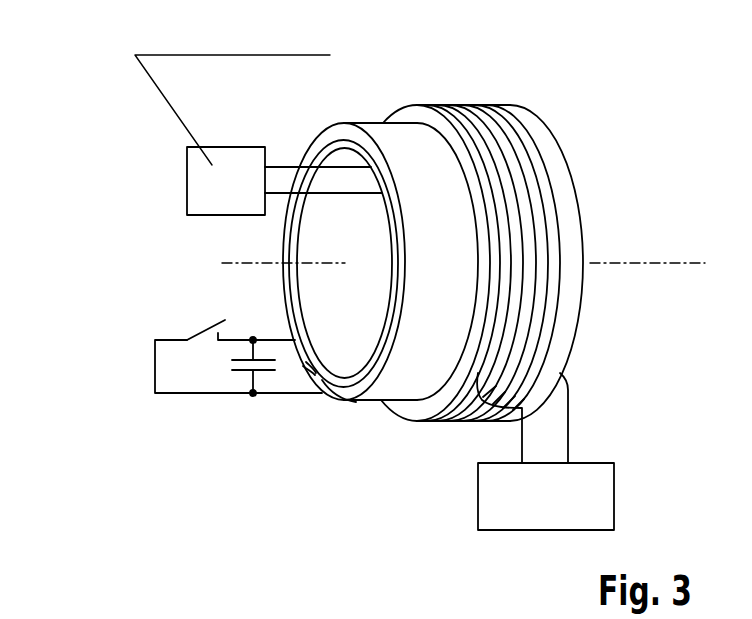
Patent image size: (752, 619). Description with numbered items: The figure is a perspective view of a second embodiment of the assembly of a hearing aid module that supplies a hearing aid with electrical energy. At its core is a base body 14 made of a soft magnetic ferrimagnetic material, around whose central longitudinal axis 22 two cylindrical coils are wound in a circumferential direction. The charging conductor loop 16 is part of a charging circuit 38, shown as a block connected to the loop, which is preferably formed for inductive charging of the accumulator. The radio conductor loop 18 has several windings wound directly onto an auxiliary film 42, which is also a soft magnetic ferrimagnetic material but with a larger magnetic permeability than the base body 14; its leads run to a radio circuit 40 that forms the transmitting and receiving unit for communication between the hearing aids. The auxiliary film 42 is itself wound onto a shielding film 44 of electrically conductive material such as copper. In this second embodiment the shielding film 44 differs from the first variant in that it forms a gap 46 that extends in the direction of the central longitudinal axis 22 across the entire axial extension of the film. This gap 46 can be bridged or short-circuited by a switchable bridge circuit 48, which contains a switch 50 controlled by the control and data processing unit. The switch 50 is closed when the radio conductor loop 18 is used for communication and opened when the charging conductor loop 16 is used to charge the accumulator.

The base body 14 is at (312, 249).
The charging conductor loop 16 is at (352, 175).
The radio conductor loop 18 is at (560, 300).
The central longitudinal axis 22 is at (688, 267).
The charging circuit 38 is at (222, 146).
The radio circuit 40 is at (614, 493).
The auxiliary film 42 is at (420, 422).
The shielding film 44 is at (338, 398).
The gap 46 is at (296, 381).
The bridge circuit 48 is at (128, 368).
The switch 50 is at (200, 332).